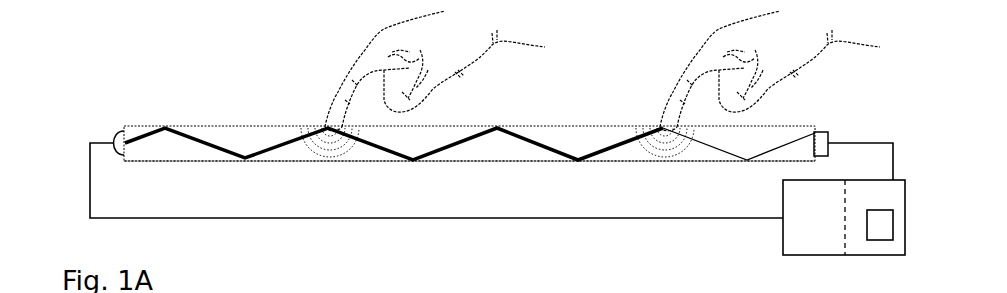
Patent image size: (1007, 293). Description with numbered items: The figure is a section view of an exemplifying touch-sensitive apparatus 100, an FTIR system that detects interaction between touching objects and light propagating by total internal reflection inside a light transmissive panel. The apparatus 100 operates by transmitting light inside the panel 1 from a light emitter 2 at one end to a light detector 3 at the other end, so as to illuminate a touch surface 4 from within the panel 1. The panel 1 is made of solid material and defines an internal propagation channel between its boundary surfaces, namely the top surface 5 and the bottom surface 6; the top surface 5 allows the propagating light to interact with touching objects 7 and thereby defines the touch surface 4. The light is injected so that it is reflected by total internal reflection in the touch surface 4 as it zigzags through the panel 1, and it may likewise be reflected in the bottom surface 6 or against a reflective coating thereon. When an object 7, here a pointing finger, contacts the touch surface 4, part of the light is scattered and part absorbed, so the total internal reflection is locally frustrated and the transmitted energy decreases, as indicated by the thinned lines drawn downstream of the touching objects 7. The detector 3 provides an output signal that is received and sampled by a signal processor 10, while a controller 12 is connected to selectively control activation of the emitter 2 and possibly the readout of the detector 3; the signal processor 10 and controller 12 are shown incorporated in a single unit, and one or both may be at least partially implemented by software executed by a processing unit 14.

The touch-sensitive apparatus 100 is at (172, 72).
The panel 1 is at (240, 137).
The light emitter 2 is at (122, 129).
The light detector 3 is at (820, 132).
The touch surface 4 is at (547, 126).
The top surface 5 is at (300, 126).
The bottom surface 6 is at (290, 162).
The touching object 7 is at (362, 55).
The signal processor 10 is at (893, 255).
The controller 12 is at (783, 230).
The processing unit 14 is at (880, 210).